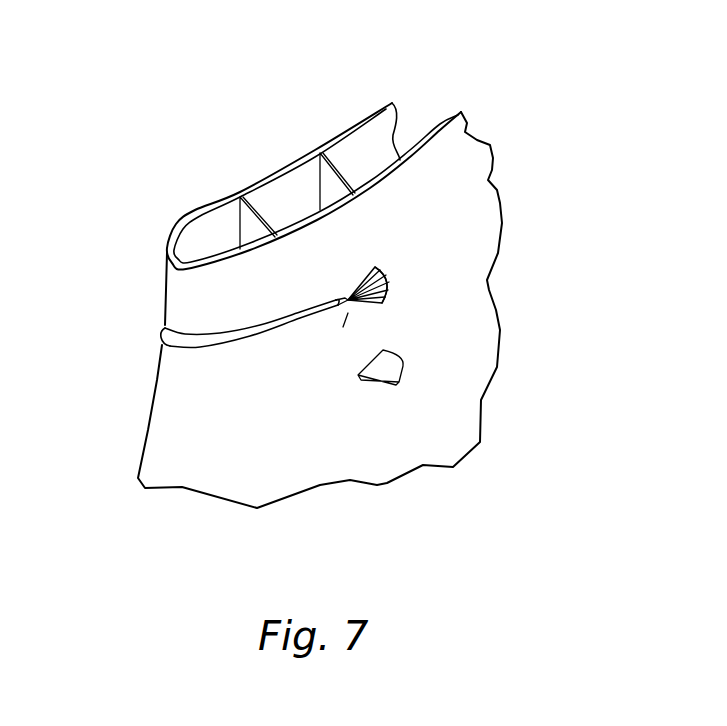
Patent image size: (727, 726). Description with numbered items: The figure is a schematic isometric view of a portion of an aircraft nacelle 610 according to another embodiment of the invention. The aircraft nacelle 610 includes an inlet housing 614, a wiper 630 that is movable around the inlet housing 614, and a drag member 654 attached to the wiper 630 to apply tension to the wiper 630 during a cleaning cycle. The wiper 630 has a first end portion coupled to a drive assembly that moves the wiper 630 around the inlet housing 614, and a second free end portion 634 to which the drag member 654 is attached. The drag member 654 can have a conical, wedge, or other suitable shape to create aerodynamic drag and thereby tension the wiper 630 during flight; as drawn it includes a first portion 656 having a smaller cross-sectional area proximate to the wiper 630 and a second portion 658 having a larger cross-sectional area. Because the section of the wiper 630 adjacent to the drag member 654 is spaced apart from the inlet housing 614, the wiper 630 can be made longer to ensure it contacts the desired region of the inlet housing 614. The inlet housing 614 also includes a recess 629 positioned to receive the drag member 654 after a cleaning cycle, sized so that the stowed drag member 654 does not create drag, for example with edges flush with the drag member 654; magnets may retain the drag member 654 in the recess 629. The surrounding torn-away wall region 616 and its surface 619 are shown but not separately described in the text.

The aircraft nacelle 610 is at (267, 166).
The inlet housing 614 is at (173, 300).
The base plate 616 is at (316, 322).
The plate surface 619 is at (370, 437).
The recess 629 is at (405, 372).
The wiper 630 is at (254, 330).
The second free end portion 634 is at (335, 302).
The drag member 654 is at (348, 311).
The first portion 656 is at (351, 267).
The second portion 658 is at (388, 293).